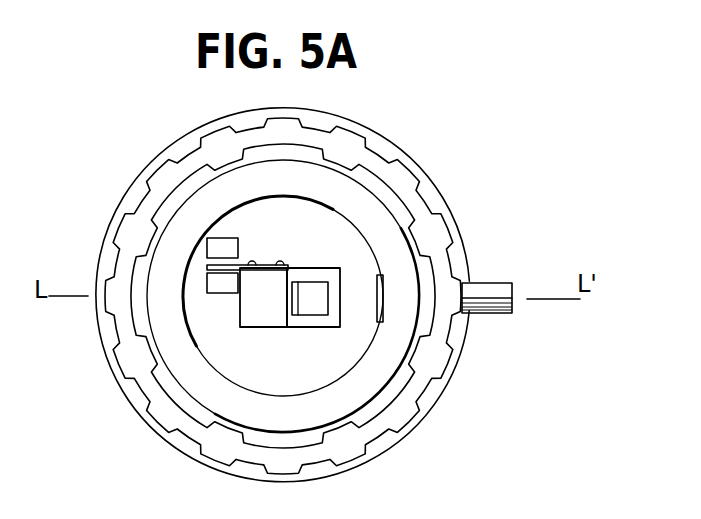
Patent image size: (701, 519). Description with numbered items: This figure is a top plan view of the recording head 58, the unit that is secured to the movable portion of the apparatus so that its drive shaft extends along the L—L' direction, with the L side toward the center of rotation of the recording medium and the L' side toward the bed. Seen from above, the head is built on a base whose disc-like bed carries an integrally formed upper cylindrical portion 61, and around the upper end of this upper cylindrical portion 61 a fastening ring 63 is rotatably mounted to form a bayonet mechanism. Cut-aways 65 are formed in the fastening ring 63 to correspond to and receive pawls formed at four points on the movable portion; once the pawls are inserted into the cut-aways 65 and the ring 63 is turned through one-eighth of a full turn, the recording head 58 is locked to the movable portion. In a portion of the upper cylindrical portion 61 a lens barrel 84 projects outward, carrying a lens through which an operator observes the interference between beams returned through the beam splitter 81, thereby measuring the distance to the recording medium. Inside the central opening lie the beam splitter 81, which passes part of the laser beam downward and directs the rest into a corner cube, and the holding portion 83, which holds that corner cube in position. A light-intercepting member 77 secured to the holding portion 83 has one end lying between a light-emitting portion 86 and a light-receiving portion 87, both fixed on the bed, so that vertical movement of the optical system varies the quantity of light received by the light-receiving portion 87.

The recording head 58 is at (165, 444).
The fastening ring 63 is at (397, 178).
The cut-aways 65 is at (428, 292).
The upper cylindrical portion 61 is at (392, 245).
The lens barrel 84 is at (498, 292).
The light-emitting portion 86 is at (228, 242).
The light-intercepting member 77 is at (243, 263).
The light-receiving portion 87 is at (218, 293).
The holding portion 83 is at (265, 308).
The beam splitter 81 is at (308, 305).